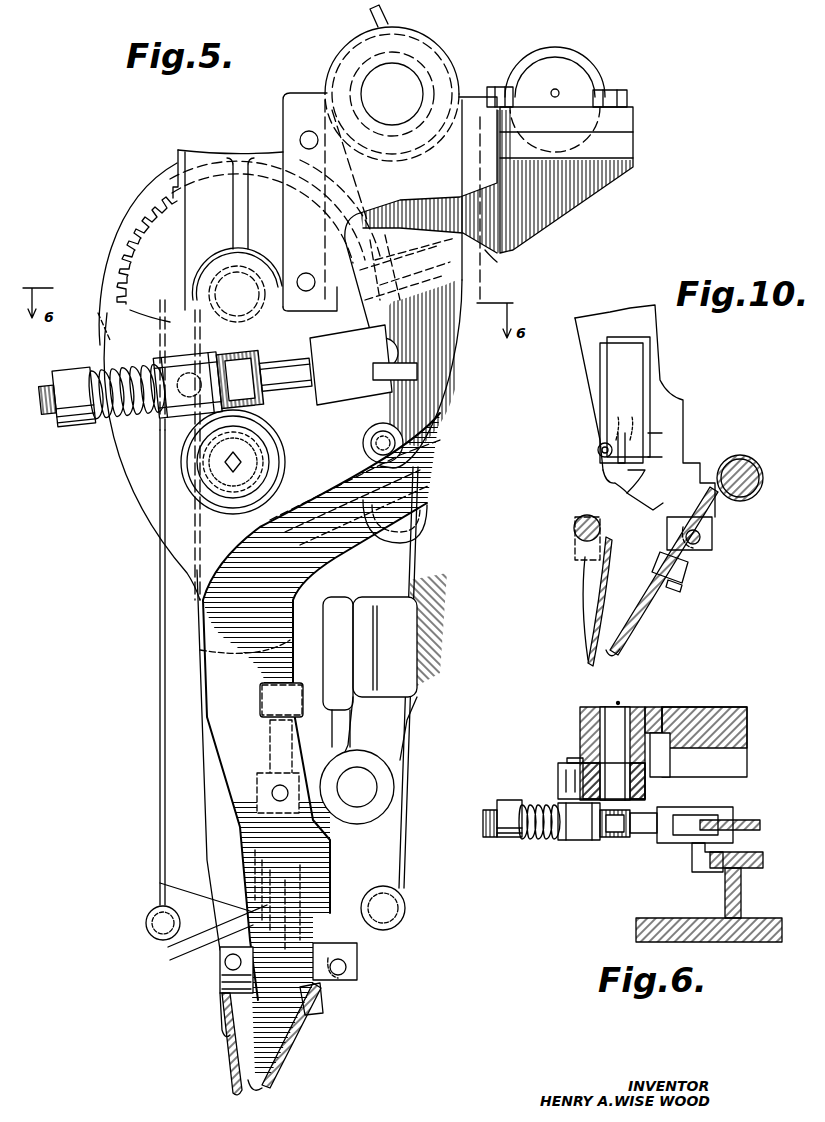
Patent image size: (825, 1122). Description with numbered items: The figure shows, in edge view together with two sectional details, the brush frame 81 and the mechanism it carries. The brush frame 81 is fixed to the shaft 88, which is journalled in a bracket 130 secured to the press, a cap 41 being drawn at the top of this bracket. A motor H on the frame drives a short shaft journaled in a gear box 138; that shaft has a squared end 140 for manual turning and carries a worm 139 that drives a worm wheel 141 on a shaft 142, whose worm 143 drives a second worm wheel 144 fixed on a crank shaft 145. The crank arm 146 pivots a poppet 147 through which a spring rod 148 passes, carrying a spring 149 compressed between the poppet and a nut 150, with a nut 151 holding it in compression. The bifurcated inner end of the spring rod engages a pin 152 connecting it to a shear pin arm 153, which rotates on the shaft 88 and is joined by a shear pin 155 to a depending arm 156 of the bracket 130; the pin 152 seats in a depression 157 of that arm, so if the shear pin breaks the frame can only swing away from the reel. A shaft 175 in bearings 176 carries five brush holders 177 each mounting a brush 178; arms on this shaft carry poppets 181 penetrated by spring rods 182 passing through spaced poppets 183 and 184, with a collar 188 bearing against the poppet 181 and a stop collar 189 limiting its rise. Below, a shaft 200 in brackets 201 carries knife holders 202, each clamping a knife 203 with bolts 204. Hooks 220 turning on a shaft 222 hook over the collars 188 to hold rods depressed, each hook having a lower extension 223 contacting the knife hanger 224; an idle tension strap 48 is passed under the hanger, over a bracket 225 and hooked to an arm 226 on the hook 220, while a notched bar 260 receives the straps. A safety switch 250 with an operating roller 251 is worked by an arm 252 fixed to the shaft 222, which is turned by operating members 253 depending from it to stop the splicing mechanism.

In FIG. 5, the bracket 130 is at (283, 128).
In FIG. 6, the bracket 130 is at (715, 943).
In FIG. 5, the shaft 88 is at (392, 83).
In FIG. 5, the bearing cap 41 is at (592, 73).
In FIG. 5, the gear box 138 is at (150, 202).
In FIG. 5, the second worm wheel 144 is at (135, 243).
In FIG. 5, the crank shaft 145 is at (226, 252).
In FIG. 6, the crank shaft 145 is at (600, 740).
In FIG. 5, the crank arm 146 is at (217, 327).
In FIG. 6, the crank arm 146 is at (648, 794).
In FIG. 5, the nut 151 is at (190, 325).
In FIG. 6, the nut 151 is at (617, 840).
In FIG. 5, the bracket 225 is at (100, 315).
In FIG. 5, the shear pin arm 153 is at (490, 253).
In FIG. 6, the shear pin arm 153 is at (752, 820).
In FIG. 5, the worm 143 is at (473, 283).
In FIG. 5, the depression 157 is at (400, 360).
In FIG. 5, the pin 152 is at (388, 383).
In FIG. 6, the pin 152 is at (695, 845).
In FIG. 5, the depending arm 156 is at (440, 407).
In FIG. 6, the depending arm 156 is at (751, 868).
In FIG. 5, the shear pin 155 is at (392, 445).
In FIG. 6, the shear pin 155 is at (710, 875).
In FIG. 5, the worm wheel 141 is at (422, 508).
In FIG. 5, the tension straps 48 is at (420, 550).
In FIG. 5, the nut 150 is at (66, 356).
In FIG. 6, the nut 150 is at (512, 800).
In FIG. 5, the poppet 147 is at (165, 362).
In FIG. 6, the poppet 147 is at (580, 843).
In FIG. 5, the spring rod 148 is at (45, 400).
In FIG. 6, the spring rod 148 is at (486, 830).
In FIG. 5, the spring 149 is at (120, 422).
In FIG. 6, the spring 149 is at (540, 842).
In FIG. 5, the worm 139 is at (215, 463).
In FIG. 5, the motor H is at (125, 523).
In FIG. 5, the squared end 140 is at (233, 470).
In FIG. 5, the shaft 142 is at (300, 535).
In FIG. 5, the poppet 183 is at (200, 650).
In FIG. 5, the brush frame 81 is at (210, 672).
In FIG. 5, the stop collar 189 is at (260, 704).
In FIG. 5, the spring rod 182 is at (268, 745).
In FIG. 5, the poppet 181 is at (257, 790).
In FIG. 5, the collar 188 is at (250, 870).
In FIG. 5, the brush 178 is at (410, 688).
In FIG. 5, the brush holders 177 is at (385, 718).
In FIG. 5, the shaft 175 is at (365, 778).
In FIG. 5, the bearings 176 is at (388, 794).
In FIG. 5, the hooks 220 is at (165, 890).
In FIG. 5, the arm 226 is at (147, 923).
In FIG. 5, the poppet 184 is at (255, 912).
In FIG. 5, the shaft 222 is at (230, 962).
In FIG. 10, the shaft 222 is at (575, 535).
In FIG. 5, the lower extension 223 is at (218, 1030).
In FIG. 5, the operating members 253 is at (233, 1082).
In FIG. 10, the operating members 253 is at (588, 632).
In FIG. 5, the knife hanger 224 is at (255, 1090).
In FIG. 10, the knife hanger 224 is at (632, 645).
In FIG. 5, the bar 260 is at (392, 905).
In FIG. 10, the bar 260 is at (740, 460).
In FIG. 5, the brackets 201 is at (360, 960).
In FIG. 10, the brackets 201 is at (712, 520).
In FIG. 5, the shaft 200 is at (345, 970).
In FIG. 10, the shaft 200 is at (702, 538).
In FIG. 5, the knife holders 202 is at (325, 1000).
In FIG. 10, the knife holders 202 is at (690, 563).
In FIG. 5, the knife 203 is at (300, 1035).
In FIG. 10, the knife 203 is at (668, 624).
In FIG. 10, the safety switch 250 is at (630, 370).
In FIG. 10, the operating roller 251 is at (598, 460).
In FIG. 10, the arm 252 is at (612, 478).
In FIG. 10, the bolts 204 is at (683, 584).